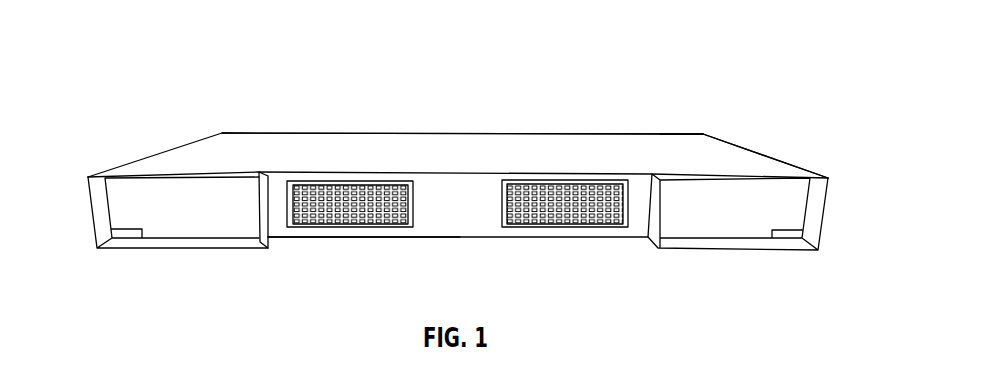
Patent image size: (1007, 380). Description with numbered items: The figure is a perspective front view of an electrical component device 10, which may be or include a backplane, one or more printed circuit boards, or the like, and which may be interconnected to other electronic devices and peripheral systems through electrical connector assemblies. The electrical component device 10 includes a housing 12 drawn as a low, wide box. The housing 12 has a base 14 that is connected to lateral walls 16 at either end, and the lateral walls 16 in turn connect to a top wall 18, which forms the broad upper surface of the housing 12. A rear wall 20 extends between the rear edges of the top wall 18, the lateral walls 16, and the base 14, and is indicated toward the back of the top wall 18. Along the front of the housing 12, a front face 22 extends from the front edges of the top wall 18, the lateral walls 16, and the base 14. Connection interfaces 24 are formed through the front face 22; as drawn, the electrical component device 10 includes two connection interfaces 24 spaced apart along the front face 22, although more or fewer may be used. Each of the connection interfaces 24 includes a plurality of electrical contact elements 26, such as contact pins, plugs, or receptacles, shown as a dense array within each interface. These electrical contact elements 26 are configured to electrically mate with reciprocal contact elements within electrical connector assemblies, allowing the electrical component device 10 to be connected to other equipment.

The electrical component device 10 is at (108, 58).
The housing 12 is at (215, 141).
The base 14 is at (290, 238).
The lateral walls 16 is at (127, 163).
The top wall 18 is at (578, 152).
The rear wall 20 is at (680, 133).
The front face 22 is at (455, 222).
The connection interfaces 24 is at (412, 184).
The electrical contact elements 26 is at (330, 183).